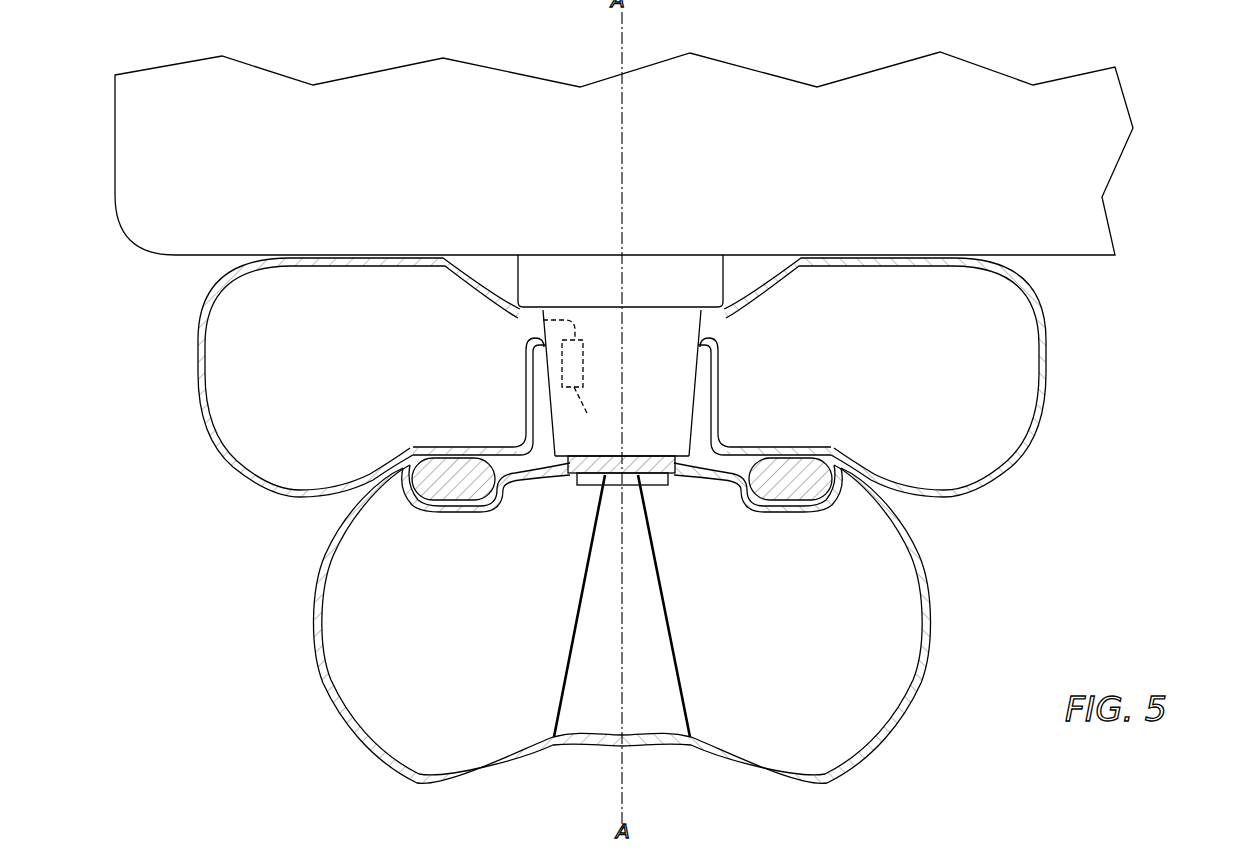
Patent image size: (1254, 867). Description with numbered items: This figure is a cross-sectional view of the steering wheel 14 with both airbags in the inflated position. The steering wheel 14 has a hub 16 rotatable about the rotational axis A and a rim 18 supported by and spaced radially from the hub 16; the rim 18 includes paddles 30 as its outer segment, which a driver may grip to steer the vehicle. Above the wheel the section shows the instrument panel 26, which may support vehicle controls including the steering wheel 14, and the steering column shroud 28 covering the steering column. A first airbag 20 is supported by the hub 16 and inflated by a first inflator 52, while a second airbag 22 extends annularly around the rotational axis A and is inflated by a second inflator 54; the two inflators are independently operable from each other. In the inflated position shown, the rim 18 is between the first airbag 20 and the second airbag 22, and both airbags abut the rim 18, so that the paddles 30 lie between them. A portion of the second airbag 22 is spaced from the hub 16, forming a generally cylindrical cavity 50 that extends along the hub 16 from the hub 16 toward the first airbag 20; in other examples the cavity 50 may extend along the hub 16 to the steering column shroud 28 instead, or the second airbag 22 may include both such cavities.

The steering wheel 14 is at (420, 457).
The hub 16 is at (660, 367).
The rim 18 is at (453, 490).
The first airbag 20 is at (935, 640).
The second airbag 22 is at (1047, 390).
The instrument panel 26 is at (1088, 177).
The steering column shroud 28 is at (678, 270).
The paddles 30 is at (791, 490).
The cavity 50 is at (530, 421).
The first inflator 52 is at (663, 488).
The second inflator 54 is at (571, 384).